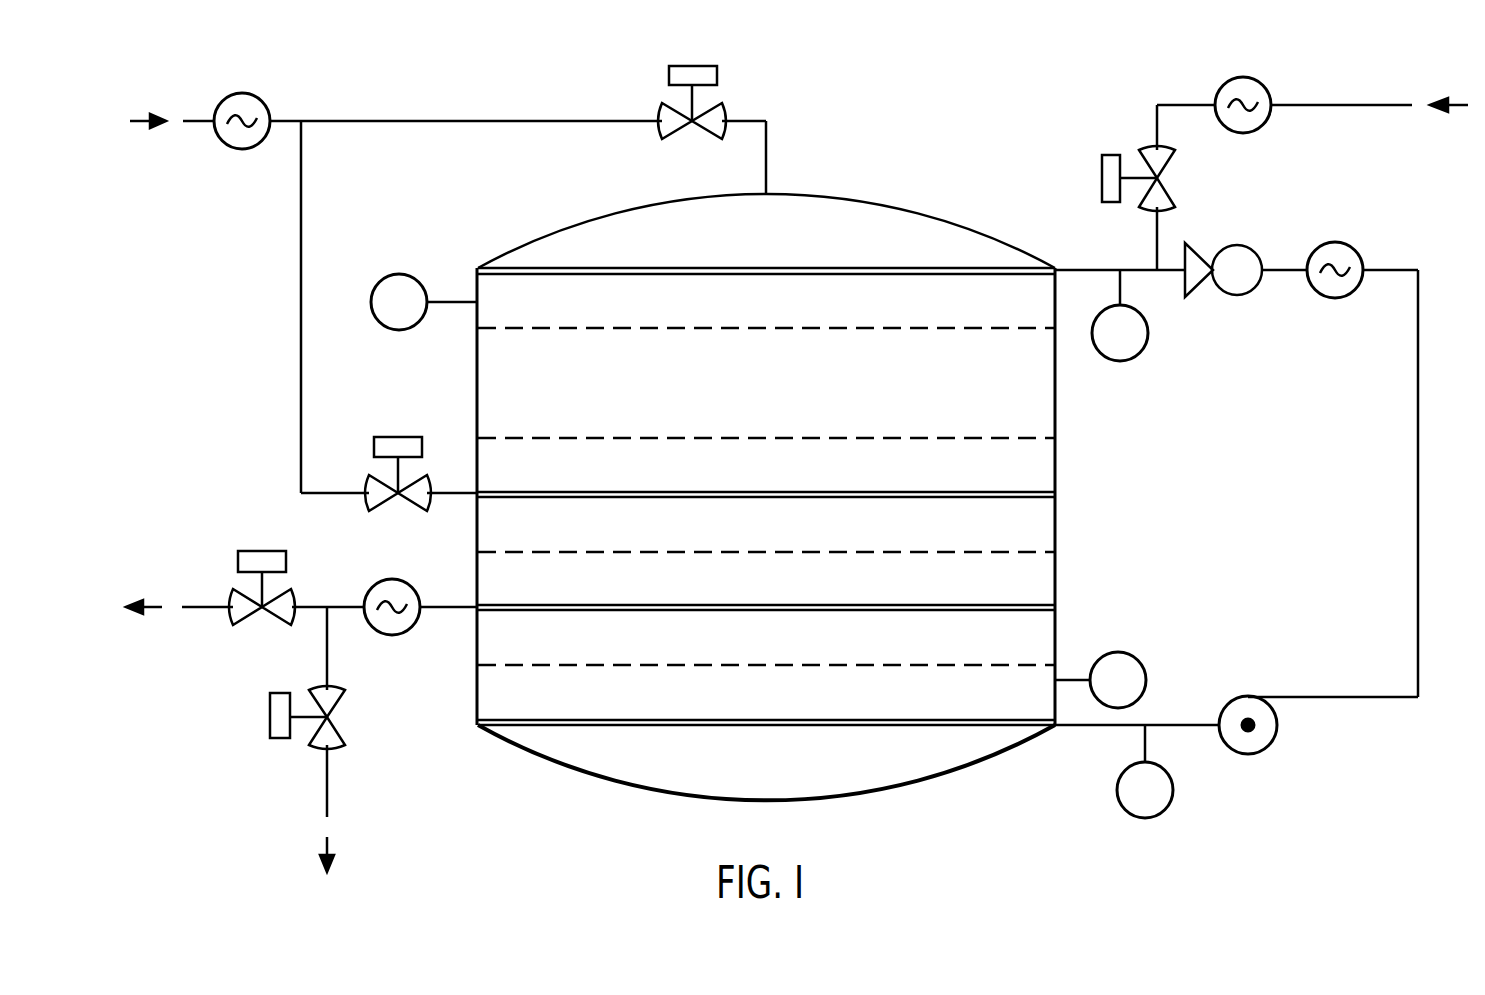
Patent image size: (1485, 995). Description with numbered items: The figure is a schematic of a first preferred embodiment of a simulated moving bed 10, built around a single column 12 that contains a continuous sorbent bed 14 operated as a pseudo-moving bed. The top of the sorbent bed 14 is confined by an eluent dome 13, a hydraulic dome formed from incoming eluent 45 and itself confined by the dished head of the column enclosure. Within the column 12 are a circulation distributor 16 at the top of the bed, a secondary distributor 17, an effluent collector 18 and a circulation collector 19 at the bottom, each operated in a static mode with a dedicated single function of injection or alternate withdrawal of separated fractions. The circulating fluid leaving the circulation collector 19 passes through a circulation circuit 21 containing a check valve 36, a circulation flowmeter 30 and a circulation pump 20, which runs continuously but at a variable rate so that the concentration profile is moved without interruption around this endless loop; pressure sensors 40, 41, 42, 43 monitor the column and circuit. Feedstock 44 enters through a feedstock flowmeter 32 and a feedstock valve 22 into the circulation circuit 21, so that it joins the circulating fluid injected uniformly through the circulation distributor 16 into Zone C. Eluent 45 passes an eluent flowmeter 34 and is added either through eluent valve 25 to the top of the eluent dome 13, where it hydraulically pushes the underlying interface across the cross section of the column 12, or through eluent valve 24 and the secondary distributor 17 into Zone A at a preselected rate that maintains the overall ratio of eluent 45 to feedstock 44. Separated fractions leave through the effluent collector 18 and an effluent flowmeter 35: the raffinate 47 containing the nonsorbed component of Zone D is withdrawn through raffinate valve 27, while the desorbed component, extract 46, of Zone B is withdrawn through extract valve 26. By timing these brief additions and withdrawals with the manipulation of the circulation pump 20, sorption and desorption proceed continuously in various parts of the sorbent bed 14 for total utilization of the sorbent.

The simulated moving bed 10 is at (946, 154).
The column 12 is at (782, 194).
The eluent dome 13 is at (883, 228).
The sorbent bed 14 is at (995, 415).
The circulation distributor 16 is at (900, 272).
The secondary distributor 17 is at (893, 492).
The effluent collector 18 is at (890, 605).
The circulation collector 19 is at (886, 720).
The circulation pump 20 is at (1270, 735).
The circulation circuit 21 is at (1418, 483).
The feedstock valve 22 is at (1163, 165).
The eluent valve 24 is at (375, 485).
The eluent valve 25 is at (712, 100).
The extract valve 26 is at (318, 737).
The raffinate valve 27 is at (237, 600).
The circulation flowmeter 30 is at (1345, 253).
The feedstock flowmeter 32 is at (1268, 88).
The eluent flowmeter 34 is at (247, 97).
The effluent flowmeter 35 is at (393, 635).
The check valve 36 is at (1238, 245).
The pressure sensor 40 is at (385, 278).
The pressure sensor 41 is at (1133, 660).
The pressure sensor 42 is at (1162, 800).
The pressure sensor 43 is at (1138, 350).
The feedstock 44 is at (1460, 108).
The eluent 45 is at (134, 117).
The extract 46 is at (330, 840).
The raffinate 47 is at (160, 612).